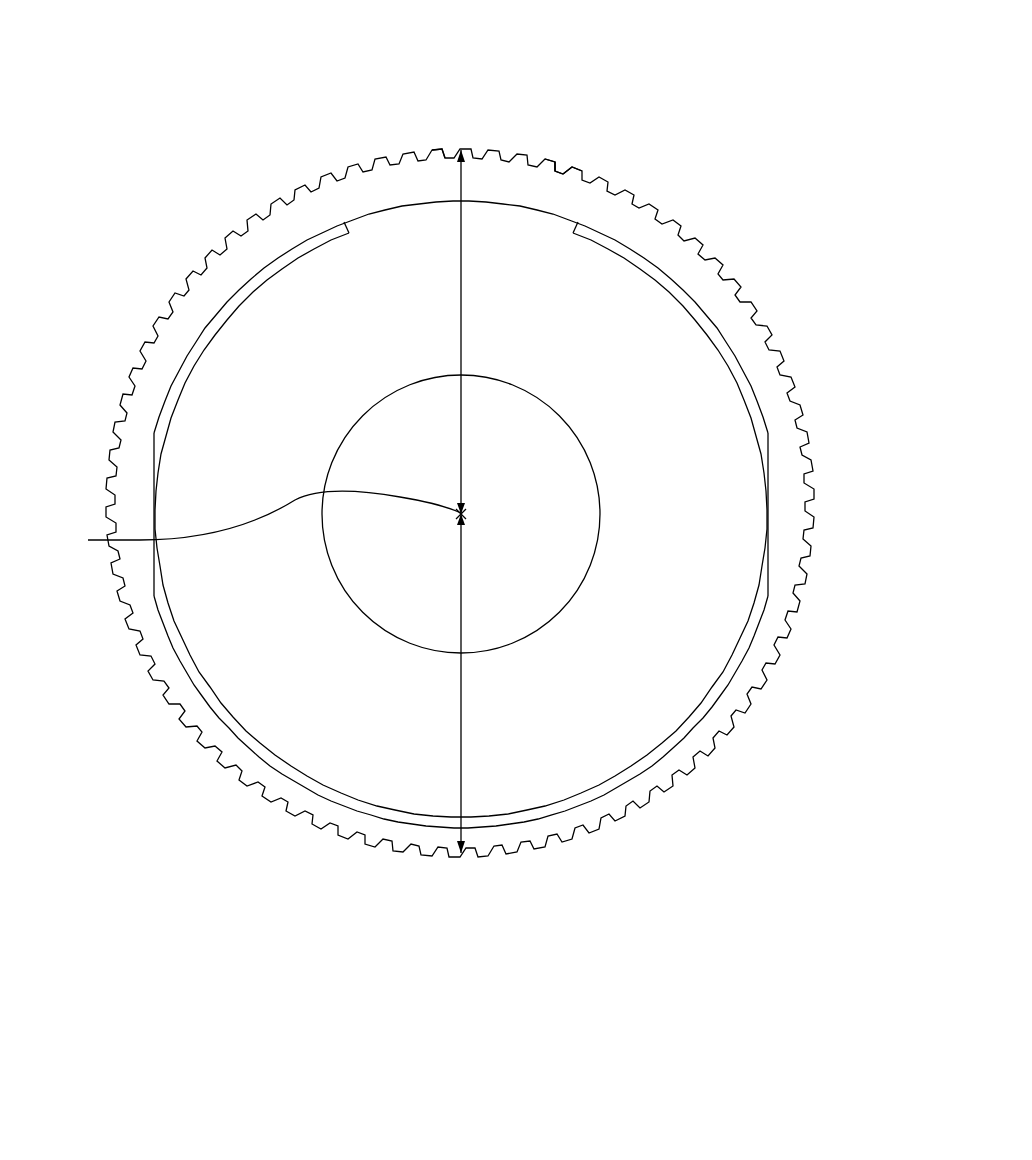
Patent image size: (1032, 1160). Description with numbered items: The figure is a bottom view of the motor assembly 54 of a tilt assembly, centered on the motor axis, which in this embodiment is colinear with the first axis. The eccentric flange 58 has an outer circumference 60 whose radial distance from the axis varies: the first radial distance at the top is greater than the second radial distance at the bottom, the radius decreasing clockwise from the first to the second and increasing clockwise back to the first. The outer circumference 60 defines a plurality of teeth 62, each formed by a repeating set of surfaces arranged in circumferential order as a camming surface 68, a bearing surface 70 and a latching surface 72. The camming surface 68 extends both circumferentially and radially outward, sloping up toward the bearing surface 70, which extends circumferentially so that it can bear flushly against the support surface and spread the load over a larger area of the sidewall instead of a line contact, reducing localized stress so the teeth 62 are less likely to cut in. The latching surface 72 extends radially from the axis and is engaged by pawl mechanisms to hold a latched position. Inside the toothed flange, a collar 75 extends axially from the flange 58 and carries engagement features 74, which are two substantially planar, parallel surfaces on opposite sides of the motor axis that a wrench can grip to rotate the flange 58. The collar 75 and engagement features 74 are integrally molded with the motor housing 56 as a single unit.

The gear 54 is at (772, 106).
The motor housing 56 is at (730, 600).
The eccentric flange 58 is at (752, 331).
The outer circumference 60 is at (292, 195).
The teeth 62 is at (428, 144).
The camming surface 68 is at (548, 162).
The bearing surface 70 is at (560, 160).
The latching surface 72 is at (575, 165).
The engagement features 74 is at (155, 500).
The collar 75 is at (213, 327).